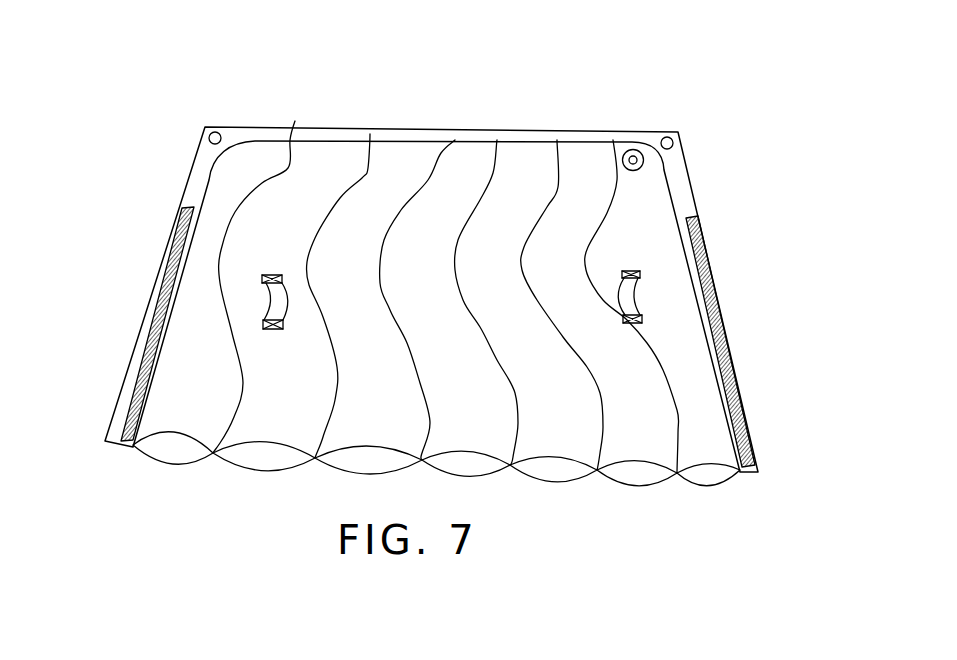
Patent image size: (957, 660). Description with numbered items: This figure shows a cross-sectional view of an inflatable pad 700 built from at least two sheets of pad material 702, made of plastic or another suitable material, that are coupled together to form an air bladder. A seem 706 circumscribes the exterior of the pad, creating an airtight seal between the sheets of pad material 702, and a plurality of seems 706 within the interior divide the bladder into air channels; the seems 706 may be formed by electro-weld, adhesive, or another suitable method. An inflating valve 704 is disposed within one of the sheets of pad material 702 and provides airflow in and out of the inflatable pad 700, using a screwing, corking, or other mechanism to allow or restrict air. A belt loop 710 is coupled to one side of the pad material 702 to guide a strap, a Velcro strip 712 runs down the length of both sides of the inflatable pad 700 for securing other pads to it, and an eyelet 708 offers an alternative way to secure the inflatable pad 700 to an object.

The inflatable pad 700 is at (143, 222).
The pad material 702 is at (690, 187).
The inflating valve 704 is at (635, 158).
The seem 706 is at (613, 140).
The eyelet 708 is at (210, 134).
The belt loop 710 is at (277, 300).
The Velcro strip 712 is at (157, 300).